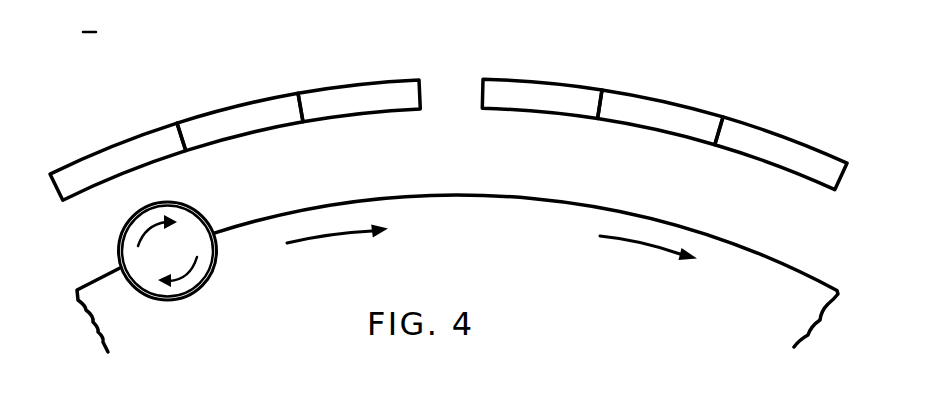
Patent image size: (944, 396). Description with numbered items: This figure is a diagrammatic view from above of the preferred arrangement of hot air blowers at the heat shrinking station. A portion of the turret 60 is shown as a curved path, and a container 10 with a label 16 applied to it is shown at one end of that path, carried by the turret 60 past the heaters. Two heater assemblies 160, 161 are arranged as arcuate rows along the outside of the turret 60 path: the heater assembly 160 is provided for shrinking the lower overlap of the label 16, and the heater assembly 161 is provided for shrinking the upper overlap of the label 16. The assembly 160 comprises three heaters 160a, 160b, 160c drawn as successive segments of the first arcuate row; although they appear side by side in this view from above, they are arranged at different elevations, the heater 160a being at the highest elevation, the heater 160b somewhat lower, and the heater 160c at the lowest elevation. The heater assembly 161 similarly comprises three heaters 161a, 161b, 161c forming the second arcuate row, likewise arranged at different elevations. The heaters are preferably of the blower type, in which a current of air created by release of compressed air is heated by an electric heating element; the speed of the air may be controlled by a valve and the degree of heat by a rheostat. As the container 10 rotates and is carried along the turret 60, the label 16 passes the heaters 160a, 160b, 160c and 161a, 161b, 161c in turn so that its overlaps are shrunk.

The container 10 is at (128, 247).
The label 16 is at (118, 258).
The turret 60 is at (487, 266).
The heater assembly 160 is at (213, 50).
The heater 160a is at (98, 170).
The heater 160b is at (200, 130).
The heater 160c is at (318, 107).
The heater assembly 161 is at (714, 45).
The heater 161a is at (513, 95).
The heater 161b is at (645, 112).
The heater 161c is at (763, 143).